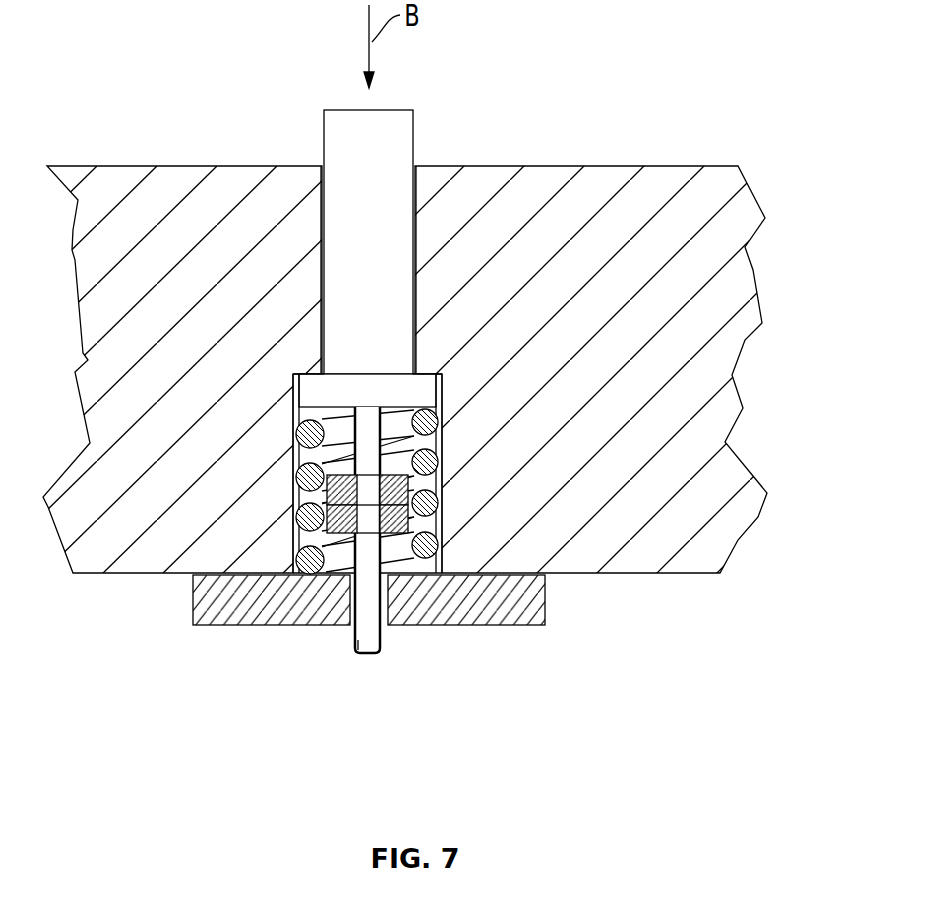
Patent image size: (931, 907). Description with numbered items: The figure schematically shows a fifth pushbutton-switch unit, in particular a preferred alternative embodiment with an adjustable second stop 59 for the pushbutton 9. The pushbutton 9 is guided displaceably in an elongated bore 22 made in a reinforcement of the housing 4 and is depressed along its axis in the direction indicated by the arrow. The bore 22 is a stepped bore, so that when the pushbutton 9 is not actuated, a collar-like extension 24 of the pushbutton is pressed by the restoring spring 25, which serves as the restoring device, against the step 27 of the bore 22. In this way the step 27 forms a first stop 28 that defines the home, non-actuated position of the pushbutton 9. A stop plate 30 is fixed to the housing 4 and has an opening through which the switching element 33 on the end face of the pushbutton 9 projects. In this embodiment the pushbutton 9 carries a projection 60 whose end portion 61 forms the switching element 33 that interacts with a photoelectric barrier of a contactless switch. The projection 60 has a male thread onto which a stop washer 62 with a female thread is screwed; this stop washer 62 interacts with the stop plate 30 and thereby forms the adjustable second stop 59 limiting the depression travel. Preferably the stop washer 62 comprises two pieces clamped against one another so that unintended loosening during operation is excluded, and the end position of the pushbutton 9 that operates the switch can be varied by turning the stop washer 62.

The housing 4 is at (492, 185).
The pushbutton 9 is at (377, 163).
The elongated bore 22 is at (323, 222).
The collar-like extension 24 is at (420, 393).
The restoring spring 25 is at (299, 430).
The step 27 is at (422, 372).
The first stop 28 is at (315, 370).
The stop plate 30 is at (210, 600).
The switching element 33 is at (365, 663).
The adjustable second stop 59 is at (343, 540).
The projection 60 is at (363, 462).
The end portion 61 is at (370, 655).
The stop washer 62 is at (408, 484).